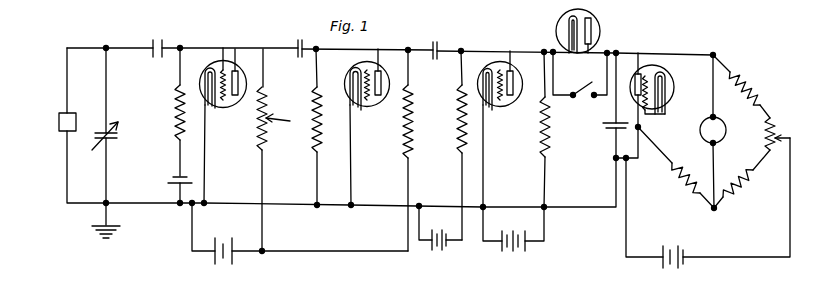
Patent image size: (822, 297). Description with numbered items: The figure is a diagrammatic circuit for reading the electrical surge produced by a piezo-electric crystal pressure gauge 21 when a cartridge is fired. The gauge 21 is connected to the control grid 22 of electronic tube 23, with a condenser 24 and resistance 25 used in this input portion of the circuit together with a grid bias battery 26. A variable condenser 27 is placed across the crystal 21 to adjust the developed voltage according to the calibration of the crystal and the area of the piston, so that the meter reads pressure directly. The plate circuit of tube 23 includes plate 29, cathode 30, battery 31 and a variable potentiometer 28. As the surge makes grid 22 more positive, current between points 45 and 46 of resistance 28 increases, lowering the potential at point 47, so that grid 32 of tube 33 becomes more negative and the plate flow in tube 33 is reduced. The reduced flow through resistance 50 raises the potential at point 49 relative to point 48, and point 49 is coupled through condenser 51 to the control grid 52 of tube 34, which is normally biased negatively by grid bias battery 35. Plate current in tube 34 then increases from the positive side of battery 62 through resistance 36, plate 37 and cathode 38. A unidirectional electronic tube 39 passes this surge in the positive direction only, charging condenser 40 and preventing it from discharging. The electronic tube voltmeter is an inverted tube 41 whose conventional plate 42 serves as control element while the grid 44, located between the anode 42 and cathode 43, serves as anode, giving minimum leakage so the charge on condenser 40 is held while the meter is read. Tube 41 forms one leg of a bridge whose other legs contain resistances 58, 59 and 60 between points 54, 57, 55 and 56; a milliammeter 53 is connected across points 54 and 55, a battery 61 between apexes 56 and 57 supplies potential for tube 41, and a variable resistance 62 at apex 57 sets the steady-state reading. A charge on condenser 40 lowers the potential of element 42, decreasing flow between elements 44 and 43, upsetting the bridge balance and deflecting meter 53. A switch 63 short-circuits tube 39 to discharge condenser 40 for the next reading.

The gauge 21 is at (50, 122).
The control grid 22 is at (223, 102).
The electronic tube 23 is at (238, 100).
The condenser 24 is at (153, 44).
The resistance 25 is at (176, 108).
The grid bias battery 26 is at (159, 188).
The variable condenser 27 is at (118, 125).
The variable potentiometer 28 is at (269, 131).
The plate 29 is at (245, 72).
The cathode 30 is at (216, 81).
The battery 31 is at (292, 239).
The grid 32 is at (361, 108).
The tube 33 is at (378, 98).
The tube 34 is at (508, 104).
The grid bias battery 35 is at (437, 241).
The resistance 36 is at (543, 142).
The plate 37 is at (524, 73).
The cathode 38 is at (494, 63).
The electronic tube 39 is at (594, 31).
The condenser 40 is at (606, 107).
The electronic tube 41 is at (685, 98).
The plate element 42 is at (647, 90).
The cathode 43 is at (677, 93).
The grid 44 is at (642, 98).
The point 45 is at (275, 200).
The point 46 is at (273, 68).
The point 47 is at (287, 122).
The point 48 is at (423, 203).
The point 49 is at (421, 104).
The resistance 50 is at (429, 118).
The condenser 51 is at (451, 40).
The control grid 52 is at (493, 110).
The meter 53 is at (703, 131).
The point 54 is at (721, 45).
The point 55 is at (723, 221).
The apex 56 is at (655, 134).
The apex 57 is at (738, 178).
The resistance 58 is at (746, 86).
The resistance 59 is at (744, 179).
The resistance 60 is at (676, 167).
The battery 61 is at (681, 262).
The battery / variable resistance 62 is at (516, 254).
The switch 63 is at (582, 101).